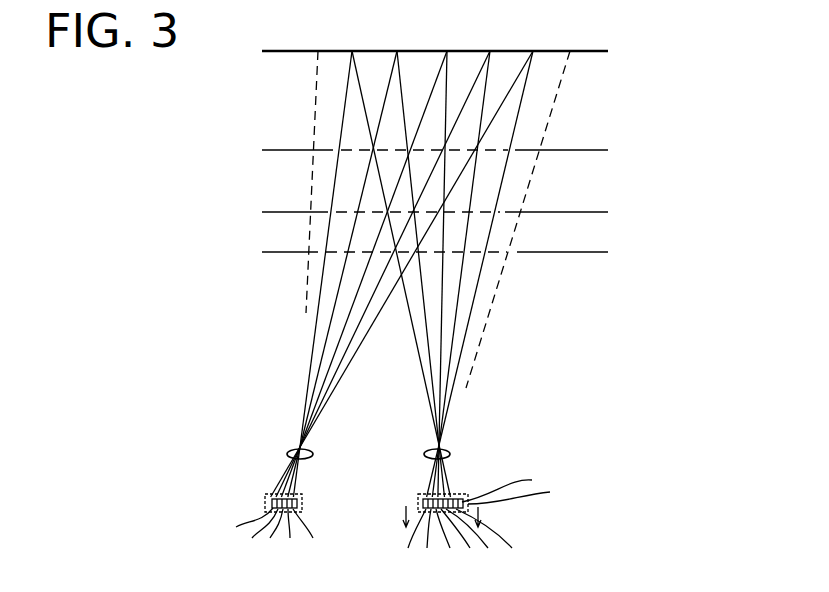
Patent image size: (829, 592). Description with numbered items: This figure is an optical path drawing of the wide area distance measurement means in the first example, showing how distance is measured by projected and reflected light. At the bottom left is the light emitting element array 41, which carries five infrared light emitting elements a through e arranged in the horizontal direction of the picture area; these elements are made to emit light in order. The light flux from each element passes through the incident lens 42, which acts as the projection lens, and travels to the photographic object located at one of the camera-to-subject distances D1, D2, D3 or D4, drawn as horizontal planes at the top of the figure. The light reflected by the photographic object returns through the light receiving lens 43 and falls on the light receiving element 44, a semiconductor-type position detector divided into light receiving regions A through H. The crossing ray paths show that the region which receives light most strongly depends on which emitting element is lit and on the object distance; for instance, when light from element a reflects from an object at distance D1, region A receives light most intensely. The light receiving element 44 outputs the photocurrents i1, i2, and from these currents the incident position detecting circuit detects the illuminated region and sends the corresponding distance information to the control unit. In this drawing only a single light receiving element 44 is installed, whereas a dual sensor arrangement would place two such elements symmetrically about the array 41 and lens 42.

The light emitting element array 41 is at (273, 493).
The incident lens 42 is at (296, 451).
The light receiving lens 43 is at (445, 451).
The light receiving element 44 is at (466, 494).
The camera-to-subject distance D1 is at (418, 51).
The camera-to-subject distance D2 is at (418, 150).
The camera-to-subject distance D3 is at (418, 212).
The camera-to-subject distance D4 is at (418, 252).
The photocurrent i1 is at (411, 506).
The photocurrent i2 is at (472, 507).